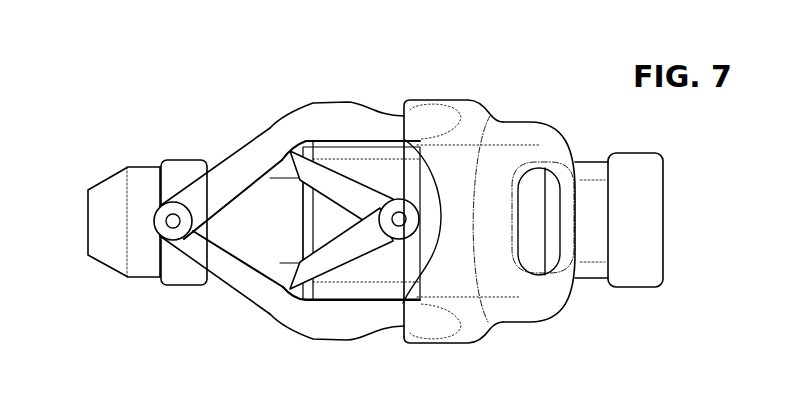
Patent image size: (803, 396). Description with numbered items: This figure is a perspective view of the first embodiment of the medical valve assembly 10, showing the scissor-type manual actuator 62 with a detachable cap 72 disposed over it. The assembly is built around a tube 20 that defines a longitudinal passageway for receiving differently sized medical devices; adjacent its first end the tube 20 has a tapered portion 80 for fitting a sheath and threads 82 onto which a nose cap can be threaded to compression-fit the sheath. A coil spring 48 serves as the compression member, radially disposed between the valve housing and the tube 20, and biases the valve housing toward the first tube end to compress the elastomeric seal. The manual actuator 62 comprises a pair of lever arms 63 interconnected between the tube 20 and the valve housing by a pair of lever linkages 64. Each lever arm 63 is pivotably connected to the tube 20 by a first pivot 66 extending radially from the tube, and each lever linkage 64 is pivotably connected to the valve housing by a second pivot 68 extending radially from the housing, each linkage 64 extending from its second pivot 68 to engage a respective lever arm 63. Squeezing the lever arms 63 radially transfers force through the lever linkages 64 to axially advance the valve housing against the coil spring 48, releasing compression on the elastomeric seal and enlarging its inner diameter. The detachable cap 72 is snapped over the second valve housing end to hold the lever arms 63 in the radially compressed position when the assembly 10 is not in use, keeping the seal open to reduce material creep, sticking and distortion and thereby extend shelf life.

The medical valve assembly 10 is at (161, 99).
The tube 20 is at (268, 203).
The coil spring 48 is at (418, 185).
The manual actuator 62 is at (292, 103).
The lever arms 63 is at (237, 170).
The lever linkages 64 is at (338, 183).
The first pivot 66 is at (161, 231).
The second pivot 68 is at (409, 137).
The detachable cap 72 is at (518, 121).
The tapered portion 80 is at (104, 184).
The threads 82 is at (148, 161).